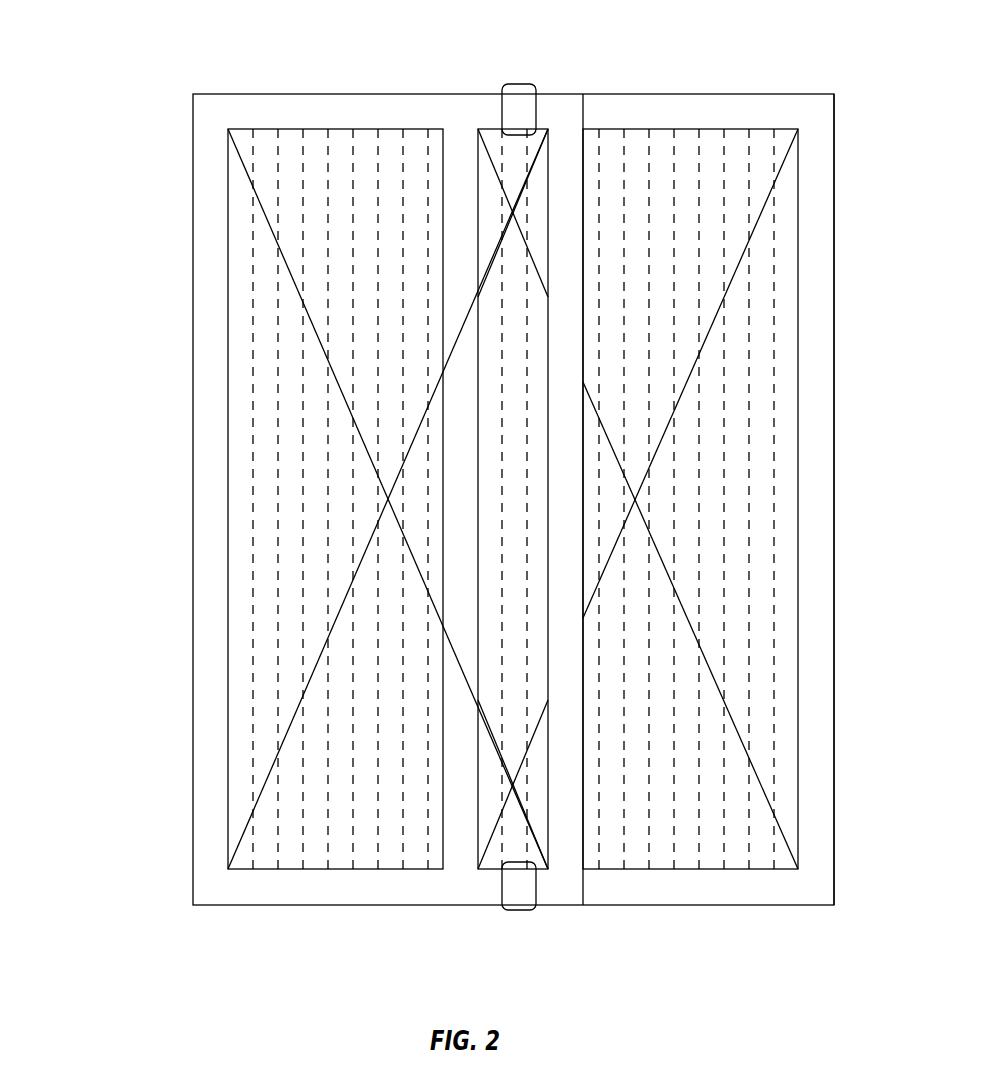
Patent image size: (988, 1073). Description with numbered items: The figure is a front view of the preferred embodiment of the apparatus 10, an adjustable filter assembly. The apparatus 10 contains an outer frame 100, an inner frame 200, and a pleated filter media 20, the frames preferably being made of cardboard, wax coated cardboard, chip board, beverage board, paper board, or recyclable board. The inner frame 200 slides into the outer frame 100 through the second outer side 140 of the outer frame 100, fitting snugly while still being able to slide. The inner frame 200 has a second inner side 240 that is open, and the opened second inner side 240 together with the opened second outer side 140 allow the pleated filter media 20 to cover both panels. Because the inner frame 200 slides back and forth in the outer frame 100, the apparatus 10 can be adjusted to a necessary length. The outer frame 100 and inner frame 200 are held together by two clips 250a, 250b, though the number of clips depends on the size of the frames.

The apparatus 10 is at (131, 48).
The outer frame 100 is at (213, 94).
The inner frame 200 is at (831, 94).
The second outer side 140 is at (583, 158).
The second inner side 240 is at (443, 158).
The clip 250a is at (520, 84).
The clip 250b is at (517, 912).
The pleated filter media 20 is at (747, 513).